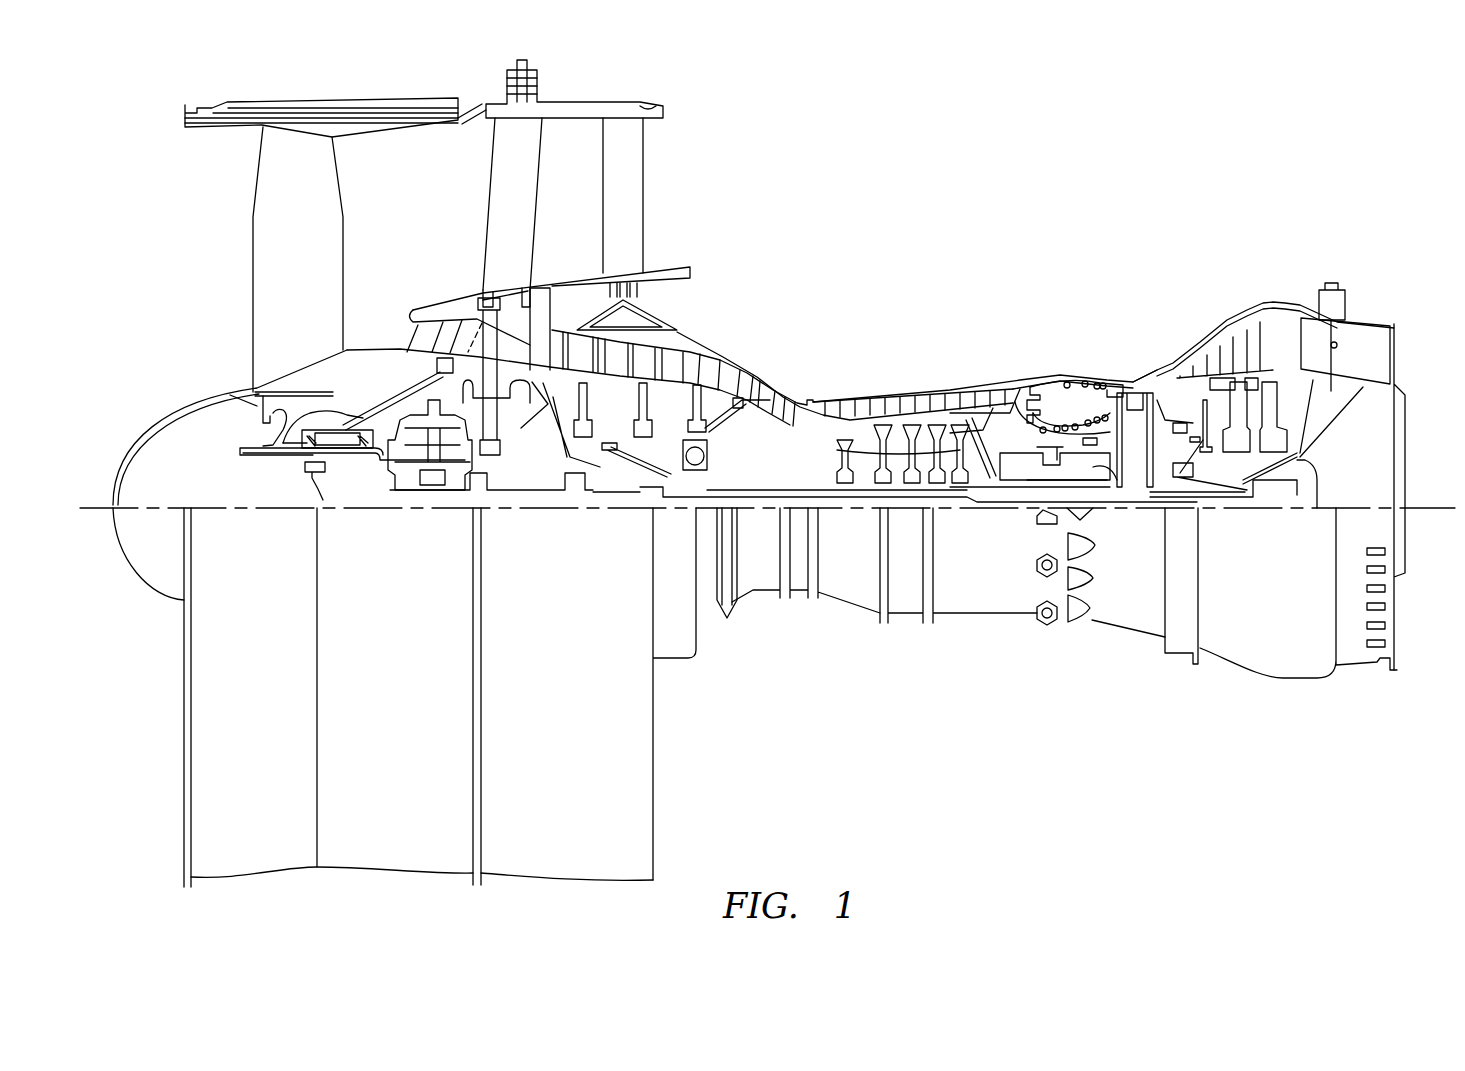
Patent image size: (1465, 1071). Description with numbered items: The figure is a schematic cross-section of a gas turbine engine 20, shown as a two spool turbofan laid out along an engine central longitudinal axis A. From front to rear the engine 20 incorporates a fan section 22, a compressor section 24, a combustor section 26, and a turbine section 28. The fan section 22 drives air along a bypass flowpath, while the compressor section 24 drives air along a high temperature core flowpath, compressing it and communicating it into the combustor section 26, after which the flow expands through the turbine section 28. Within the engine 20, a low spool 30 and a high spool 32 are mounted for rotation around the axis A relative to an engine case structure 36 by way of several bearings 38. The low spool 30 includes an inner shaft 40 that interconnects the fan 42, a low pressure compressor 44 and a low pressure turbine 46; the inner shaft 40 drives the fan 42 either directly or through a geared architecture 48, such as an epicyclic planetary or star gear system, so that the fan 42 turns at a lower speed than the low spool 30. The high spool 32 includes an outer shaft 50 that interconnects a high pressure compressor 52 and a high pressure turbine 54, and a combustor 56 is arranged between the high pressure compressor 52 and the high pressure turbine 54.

The gas turbine engine 20 is at (1120, 160).
The fan section 22 is at (182, 95).
The compressor section 24 is at (490, 243).
The combustor section 26 is at (1068, 247).
The turbine section 28 is at (1335, 247).
The low spool 30 is at (738, 460).
The high spool 32 is at (980, 432).
The engine case structure 36 is at (903, 617).
The bearings 38 is at (223, 583).
The inner shaft 40 is at (1100, 500).
The fan 42 is at (318, 315).
The low pressure compressor 44 is at (671, 349).
The low pressure turbine 46 is at (1249, 334).
The geared architecture 48 is at (434, 462).
The outer shaft 50 is at (1105, 460).
The high pressure compressor 52 is at (900, 460).
The high pressure turbine 54 is at (1135, 393).
The combustor 56 is at (1072, 409).
The engine central longitudinal axis A is at (1427, 505).